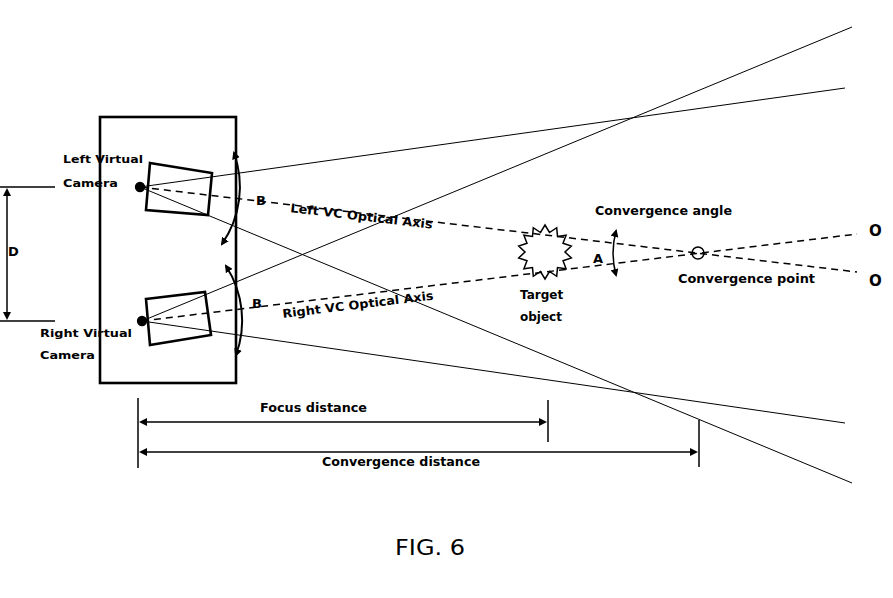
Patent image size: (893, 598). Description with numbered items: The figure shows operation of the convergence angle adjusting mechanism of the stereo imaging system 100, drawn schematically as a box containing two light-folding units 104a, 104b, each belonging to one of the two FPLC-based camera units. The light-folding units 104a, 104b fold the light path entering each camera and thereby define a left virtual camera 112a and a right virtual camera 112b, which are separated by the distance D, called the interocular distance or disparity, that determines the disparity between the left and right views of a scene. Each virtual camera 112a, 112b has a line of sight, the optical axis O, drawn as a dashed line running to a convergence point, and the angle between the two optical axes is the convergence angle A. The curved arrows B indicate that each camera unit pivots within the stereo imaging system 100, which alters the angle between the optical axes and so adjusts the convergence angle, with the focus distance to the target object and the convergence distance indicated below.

The stereo imaging system 100 is at (98, 92).
The light-folding unit 104a is at (198, 163).
The light-folding unit 104b is at (172, 346).
The left virtual camera 112a is at (139, 181).
The right virtual camera 112b is at (142, 326).